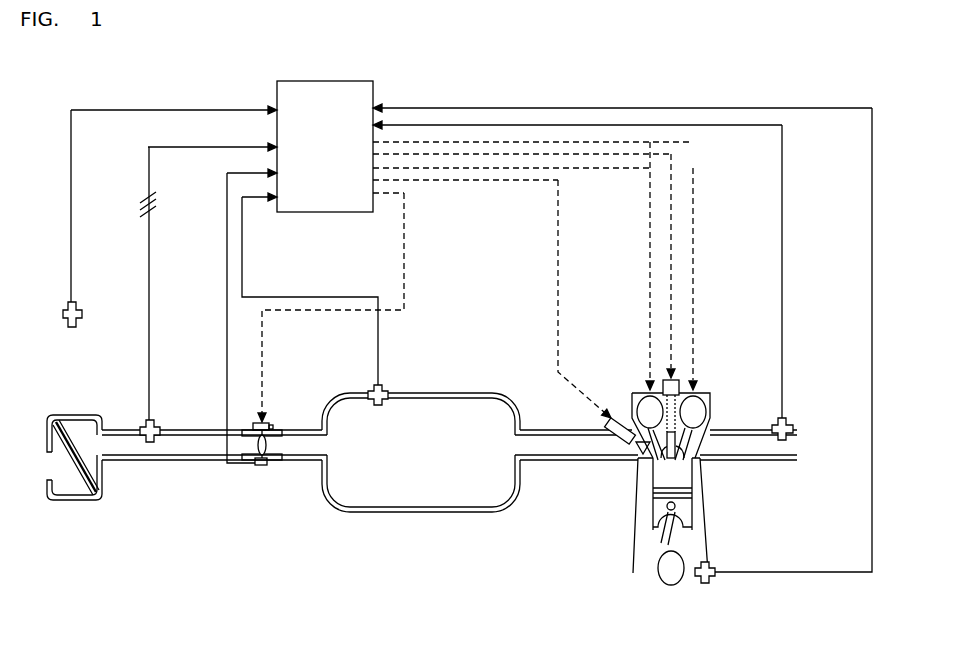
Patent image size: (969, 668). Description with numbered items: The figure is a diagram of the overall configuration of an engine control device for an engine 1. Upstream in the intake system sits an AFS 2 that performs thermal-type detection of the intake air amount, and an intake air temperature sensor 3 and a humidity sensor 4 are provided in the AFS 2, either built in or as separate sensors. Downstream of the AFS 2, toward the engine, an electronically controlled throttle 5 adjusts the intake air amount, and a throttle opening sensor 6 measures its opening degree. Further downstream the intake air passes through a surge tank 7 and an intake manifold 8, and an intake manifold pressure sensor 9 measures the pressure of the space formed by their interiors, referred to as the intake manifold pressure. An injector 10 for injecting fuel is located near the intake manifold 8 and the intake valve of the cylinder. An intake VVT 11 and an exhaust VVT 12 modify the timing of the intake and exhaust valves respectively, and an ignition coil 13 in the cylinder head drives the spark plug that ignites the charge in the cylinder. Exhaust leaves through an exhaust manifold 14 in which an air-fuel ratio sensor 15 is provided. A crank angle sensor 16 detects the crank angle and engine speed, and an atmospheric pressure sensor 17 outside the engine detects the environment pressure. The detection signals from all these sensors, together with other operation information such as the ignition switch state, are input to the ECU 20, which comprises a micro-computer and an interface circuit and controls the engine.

The engine 1 is at (697, 492).
The AFS 2 is at (175, 294).
The intake air temperature sensor 3 is at (175, 294).
The humidity sensor 4 is at (152, 421).
The electronically controlled throttle 5 is at (270, 420).
The throttle opening sensor 6 is at (267, 470).
The surge tank 7 is at (418, 495).
The intake manifold 8 is at (570, 447).
The intake manifold pressure sensor 9 is at (386, 388).
The injector 10 is at (625, 443).
The intake VVT 11 is at (638, 392).
The exhaust VVT 12 is at (700, 413).
The ignition coil 13 is at (676, 378).
The exhaust manifold 14 is at (722, 442).
The air-fuel ratio sensor 15 is at (795, 422).
The crank angle sensor 16 is at (712, 585).
The atmospheric pressure sensor 17 is at (82, 302).
The ECU 20 is at (300, 197).